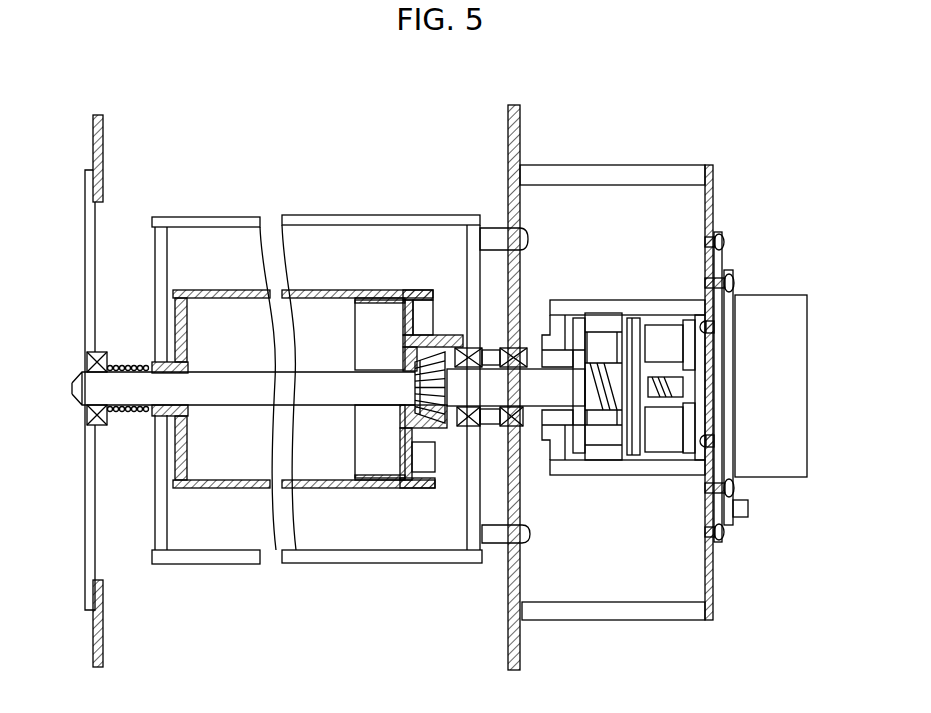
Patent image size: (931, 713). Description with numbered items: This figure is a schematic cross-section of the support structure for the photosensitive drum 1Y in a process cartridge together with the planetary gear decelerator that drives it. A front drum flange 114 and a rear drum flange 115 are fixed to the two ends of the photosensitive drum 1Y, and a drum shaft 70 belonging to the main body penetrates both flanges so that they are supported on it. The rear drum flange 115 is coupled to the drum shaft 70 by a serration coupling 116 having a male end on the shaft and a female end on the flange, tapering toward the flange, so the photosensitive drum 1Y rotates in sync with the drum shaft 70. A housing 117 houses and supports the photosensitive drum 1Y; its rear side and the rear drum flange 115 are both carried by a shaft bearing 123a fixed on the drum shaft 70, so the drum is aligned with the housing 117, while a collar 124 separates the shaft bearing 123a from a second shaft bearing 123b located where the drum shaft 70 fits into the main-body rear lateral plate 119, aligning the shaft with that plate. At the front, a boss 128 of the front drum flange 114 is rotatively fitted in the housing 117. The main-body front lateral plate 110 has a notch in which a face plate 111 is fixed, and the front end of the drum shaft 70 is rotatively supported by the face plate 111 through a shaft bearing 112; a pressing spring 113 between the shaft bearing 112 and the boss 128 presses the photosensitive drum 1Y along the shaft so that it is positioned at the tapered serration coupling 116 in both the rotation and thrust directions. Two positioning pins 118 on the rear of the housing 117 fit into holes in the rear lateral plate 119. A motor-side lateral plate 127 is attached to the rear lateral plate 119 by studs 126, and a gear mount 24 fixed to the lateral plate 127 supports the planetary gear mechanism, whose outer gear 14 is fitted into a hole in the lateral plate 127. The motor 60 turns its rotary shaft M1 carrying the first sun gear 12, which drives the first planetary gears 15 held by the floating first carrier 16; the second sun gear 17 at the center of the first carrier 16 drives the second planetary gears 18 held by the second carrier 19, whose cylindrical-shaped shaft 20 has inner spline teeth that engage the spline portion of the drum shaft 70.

The main-body front lateral plate 110 is at (93, 140).
The face plate 111 is at (85, 228).
The shaft bearing 112 is at (87, 360).
The pressing spring 113 is at (95, 427).
The boss 128 is at (148, 412).
The housing 117 is at (360, 563).
The front drum flange 114 is at (178, 290).
The photosensitive drum 1Y is at (318, 290).
The rear drum flange 115 is at (410, 290).
The serration coupling 116 is at (437, 352).
The collar 124 is at (492, 348).
The shaft bearing 123a is at (465, 428).
The shaft bearing 123b is at (510, 428).
The main-body rear lateral plate 119 is at (508, 133).
The positioning pins 118 is at (496, 543).
The studs 126 is at (618, 167).
The lateral plate 127 is at (713, 172).
The first carrier 16 is at (648, 462).
The cylindrical-shaped shaft 20 is at (556, 355).
The drum shaft 70 is at (545, 416).
The second carrier 19 is at (576, 330).
The second sun gear 17 is at (605, 365).
The second planetary gears 18 is at (598, 325).
The outer gear 14 is at (637, 330).
The first planetary gears 15 is at (657, 345).
The first sun gear 12 is at (688, 340).
The rotary shaft M1 is at (717, 386).
The motor 60 is at (807, 323).
The gear mount 24 is at (727, 250).